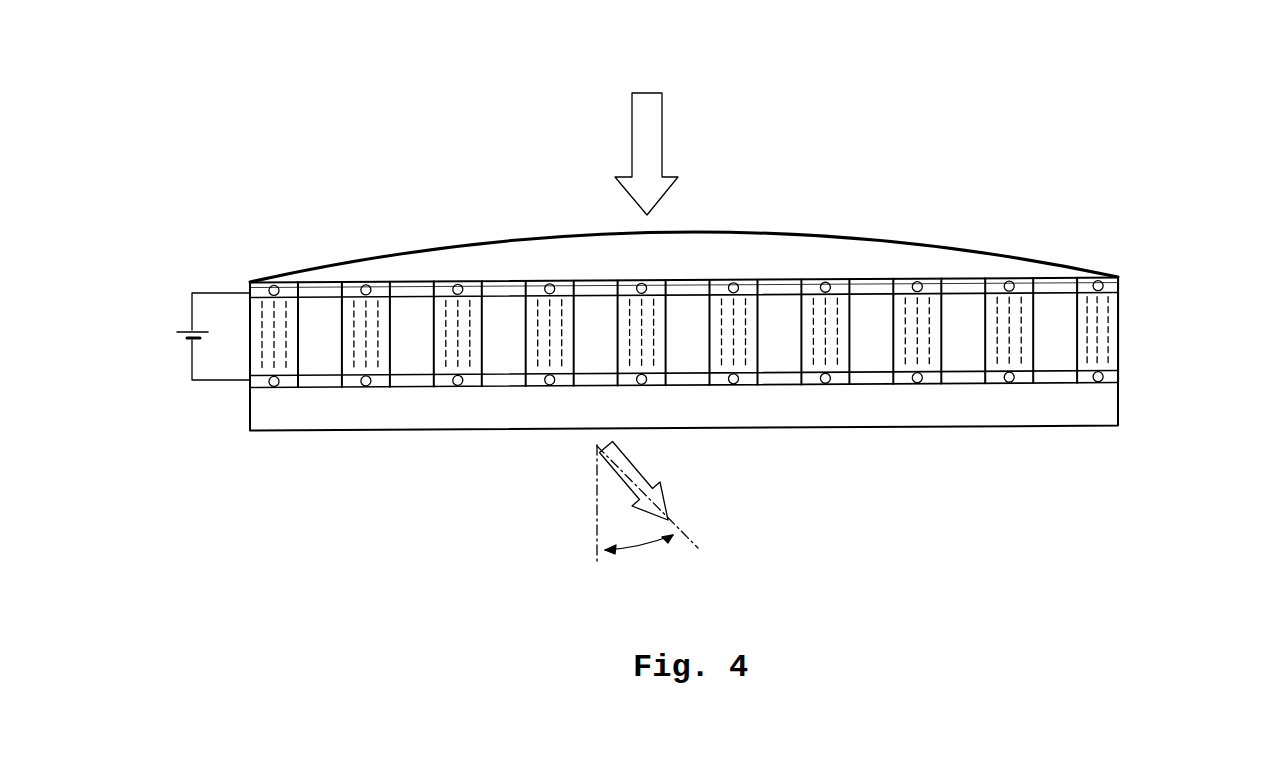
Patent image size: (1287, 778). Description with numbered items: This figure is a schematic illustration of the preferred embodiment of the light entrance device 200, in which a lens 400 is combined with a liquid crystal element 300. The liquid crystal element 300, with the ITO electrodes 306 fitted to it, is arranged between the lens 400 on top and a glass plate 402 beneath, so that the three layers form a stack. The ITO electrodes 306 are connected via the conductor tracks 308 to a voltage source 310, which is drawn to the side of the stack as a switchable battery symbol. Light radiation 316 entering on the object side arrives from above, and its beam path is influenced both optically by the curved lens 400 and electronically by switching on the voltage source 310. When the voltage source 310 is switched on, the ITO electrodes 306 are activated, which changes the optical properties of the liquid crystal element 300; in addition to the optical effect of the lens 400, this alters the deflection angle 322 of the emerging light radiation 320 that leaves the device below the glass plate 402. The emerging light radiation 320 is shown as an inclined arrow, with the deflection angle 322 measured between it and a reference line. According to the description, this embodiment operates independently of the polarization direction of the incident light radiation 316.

The light entrance device 200 is at (949, 115).
The liquid crystal element 300 is at (1142, 298).
The ITO electrodes 306 is at (1113, 288).
The conductor tracks 308 is at (224, 292).
The voltage source 310 is at (170, 338).
The light radiation entering on the object side 316 is at (662, 137).
The emerging light radiation 320 is at (640, 473).
The deflection angle 322 is at (647, 552).
The lens 400 is at (945, 248).
The glass plate 402 is at (1017, 417).